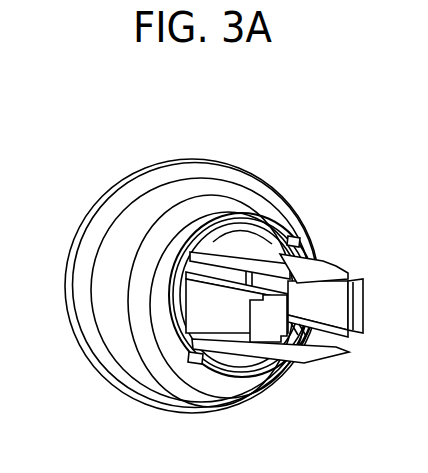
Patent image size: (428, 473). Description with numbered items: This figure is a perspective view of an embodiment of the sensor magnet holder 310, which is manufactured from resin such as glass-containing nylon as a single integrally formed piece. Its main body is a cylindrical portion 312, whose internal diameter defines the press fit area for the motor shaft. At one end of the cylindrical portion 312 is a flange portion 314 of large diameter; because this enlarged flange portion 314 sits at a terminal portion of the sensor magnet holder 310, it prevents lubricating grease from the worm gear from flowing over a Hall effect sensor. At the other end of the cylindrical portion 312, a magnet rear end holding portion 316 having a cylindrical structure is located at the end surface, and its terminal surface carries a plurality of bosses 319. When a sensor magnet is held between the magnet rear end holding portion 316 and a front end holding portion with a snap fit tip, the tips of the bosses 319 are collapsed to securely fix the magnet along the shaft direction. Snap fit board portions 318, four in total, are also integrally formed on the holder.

The sensor magnet holder 310 is at (58, 222).
The cylindrical portion 312 is at (112, 342).
The flange portion 314 is at (123, 181).
The magnet rear end holding portion 316 is at (212, 218).
The snap fit board portion 318 is at (217, 322).
The boss 319 is at (298, 240).